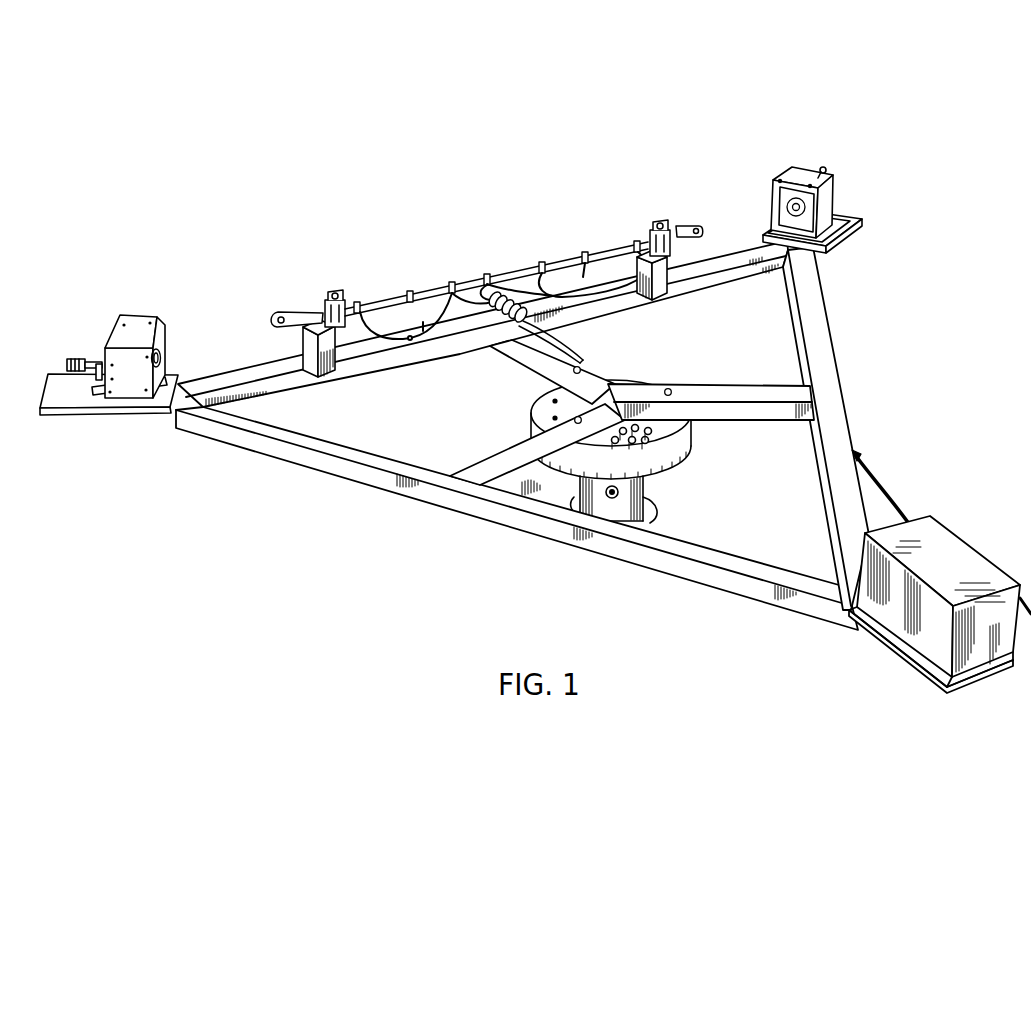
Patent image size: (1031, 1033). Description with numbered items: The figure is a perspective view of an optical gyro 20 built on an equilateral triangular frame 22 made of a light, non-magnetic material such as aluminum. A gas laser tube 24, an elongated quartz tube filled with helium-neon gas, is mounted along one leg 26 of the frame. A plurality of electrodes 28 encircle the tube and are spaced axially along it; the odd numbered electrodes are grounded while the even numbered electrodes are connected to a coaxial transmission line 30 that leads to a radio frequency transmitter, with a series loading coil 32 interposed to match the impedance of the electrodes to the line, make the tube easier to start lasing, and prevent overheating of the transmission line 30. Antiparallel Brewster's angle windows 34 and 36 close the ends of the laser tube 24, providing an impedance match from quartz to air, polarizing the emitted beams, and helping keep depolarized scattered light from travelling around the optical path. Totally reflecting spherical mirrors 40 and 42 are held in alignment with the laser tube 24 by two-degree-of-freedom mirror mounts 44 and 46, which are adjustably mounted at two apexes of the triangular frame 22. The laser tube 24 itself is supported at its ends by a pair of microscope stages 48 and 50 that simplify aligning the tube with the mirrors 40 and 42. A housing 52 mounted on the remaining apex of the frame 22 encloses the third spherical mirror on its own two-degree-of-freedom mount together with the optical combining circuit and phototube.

The optical gyro 20 is at (880, 300).
The equilateral triangular frame 22 is at (855, 392).
The gas laser tube 24 is at (478, 276).
The leg 26 is at (722, 242).
The electrodes 28 is at (452, 286).
The coaxial transmission line 30 is at (578, 346).
The series loading coil 32 is at (506, 320).
The Brewster's angle window 34 is at (284, 313).
The Brewster's angle window 36 is at (699, 226).
The spherical mirror 40 is at (160, 357).
The spherical mirror 42 is at (786, 208).
The mirror mount 44 is at (128, 333).
The mirror mount 46 is at (834, 193).
The microscope stage 48 is at (302, 347).
The microscope stage 50 is at (669, 265).
The housing 52 is at (958, 533).